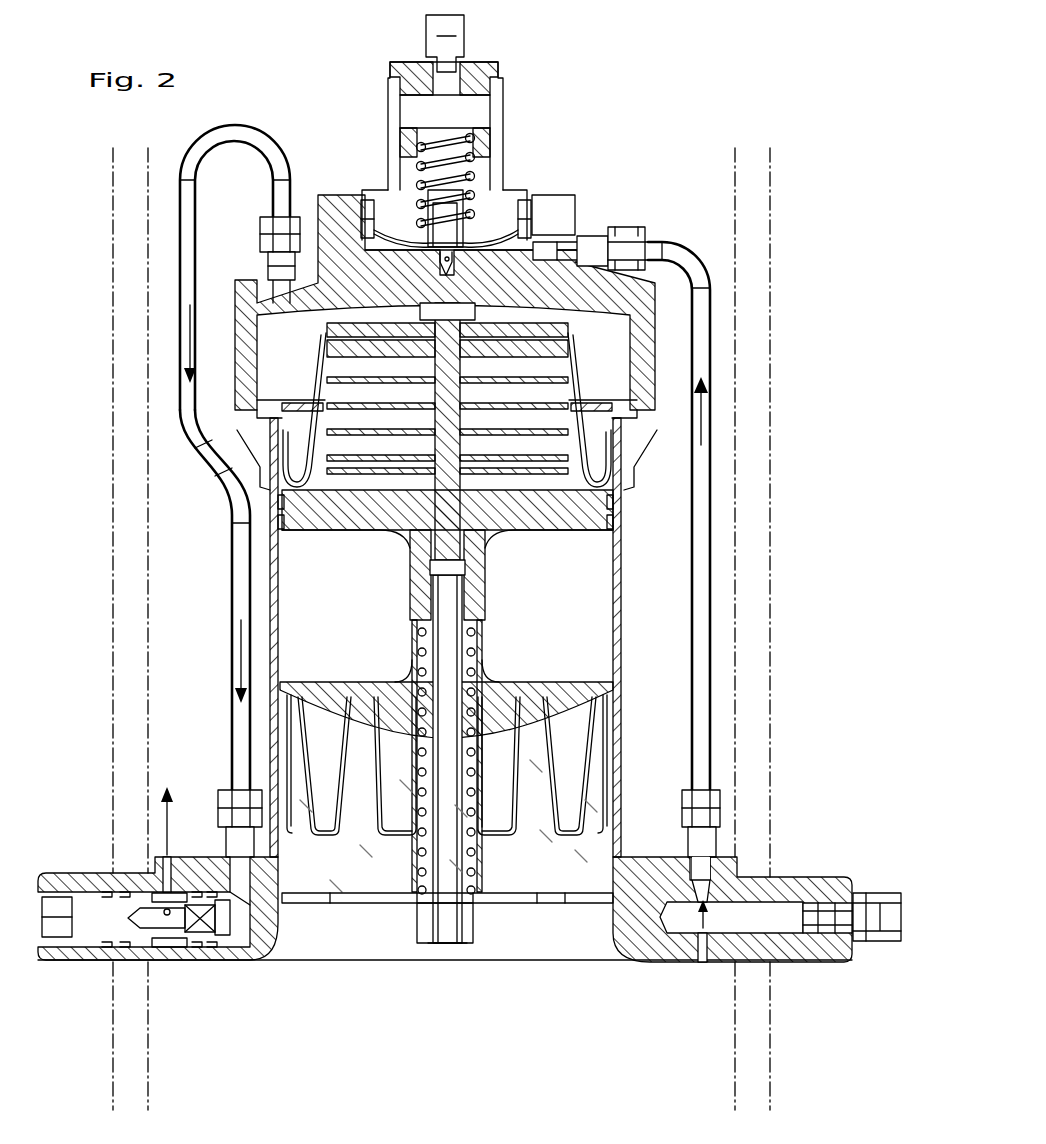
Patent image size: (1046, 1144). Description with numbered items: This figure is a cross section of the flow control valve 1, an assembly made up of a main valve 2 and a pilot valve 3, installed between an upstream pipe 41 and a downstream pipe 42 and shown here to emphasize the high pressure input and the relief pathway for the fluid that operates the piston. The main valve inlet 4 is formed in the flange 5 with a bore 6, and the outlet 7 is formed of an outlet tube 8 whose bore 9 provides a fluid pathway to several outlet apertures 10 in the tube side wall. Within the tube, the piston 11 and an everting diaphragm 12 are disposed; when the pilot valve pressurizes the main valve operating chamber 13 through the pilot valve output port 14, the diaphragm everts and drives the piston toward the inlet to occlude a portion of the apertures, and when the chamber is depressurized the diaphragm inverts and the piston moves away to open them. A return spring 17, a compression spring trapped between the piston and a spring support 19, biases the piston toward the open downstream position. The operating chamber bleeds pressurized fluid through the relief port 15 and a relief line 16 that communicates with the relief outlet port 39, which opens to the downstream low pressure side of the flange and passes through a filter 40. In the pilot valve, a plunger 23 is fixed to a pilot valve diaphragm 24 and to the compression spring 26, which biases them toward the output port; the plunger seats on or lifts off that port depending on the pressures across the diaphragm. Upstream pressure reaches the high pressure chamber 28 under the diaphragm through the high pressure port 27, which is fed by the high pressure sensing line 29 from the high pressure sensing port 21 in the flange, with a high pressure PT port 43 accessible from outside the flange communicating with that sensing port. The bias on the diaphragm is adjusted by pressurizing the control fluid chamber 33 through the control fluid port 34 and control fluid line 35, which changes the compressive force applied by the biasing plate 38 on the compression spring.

The flow control valve 1 is at (655, 78).
The main valve 2 is at (626, 596).
The pilot valve 3 is at (475, 160).
The main valve inlet 4 is at (327, 997).
The flange 5 is at (413, 905).
The bore 6 is at (294, 967).
The outlet 7 is at (640, 764).
The outlet tube 8 is at (624, 730).
The bore 9 is at (362, 870).
The outlet apertures 10 is at (340, 765).
The piston 11 is at (516, 681).
The everting diaphragm 12 is at (320, 398).
The main valve operating chamber 13 is at (308, 350).
The pilot valve output port 14 is at (455, 266).
The relief port 15 is at (265, 263).
The relief line 16 is at (232, 491).
The return spring 17 is at (480, 871).
The spring support 19 is at (352, 905).
The high pressure sensing port 21 is at (706, 964).
The plunger 23 is at (446, 271).
The pilot valve diaphragm 24 is at (494, 237).
The compression spring 26 is at (473, 170).
The high pressure port 27 is at (548, 243).
The high pressure chamber 28 is at (370, 205).
The high pressure sensing line 29 is at (684, 242).
The control fluid chamber 33 is at (452, 127).
The control fluid port 34 is at (462, 72).
The control fluid line 35 is at (427, 30).
The biasing plate 38 is at (481, 128).
The relief outlet port 39 is at (160, 856).
The filter 40 is at (165, 956).
The upstream pipe 41 is at (150, 1075).
The downstream pipe 42 is at (772, 221).
The high pressure PT port 43 is at (893, 896).